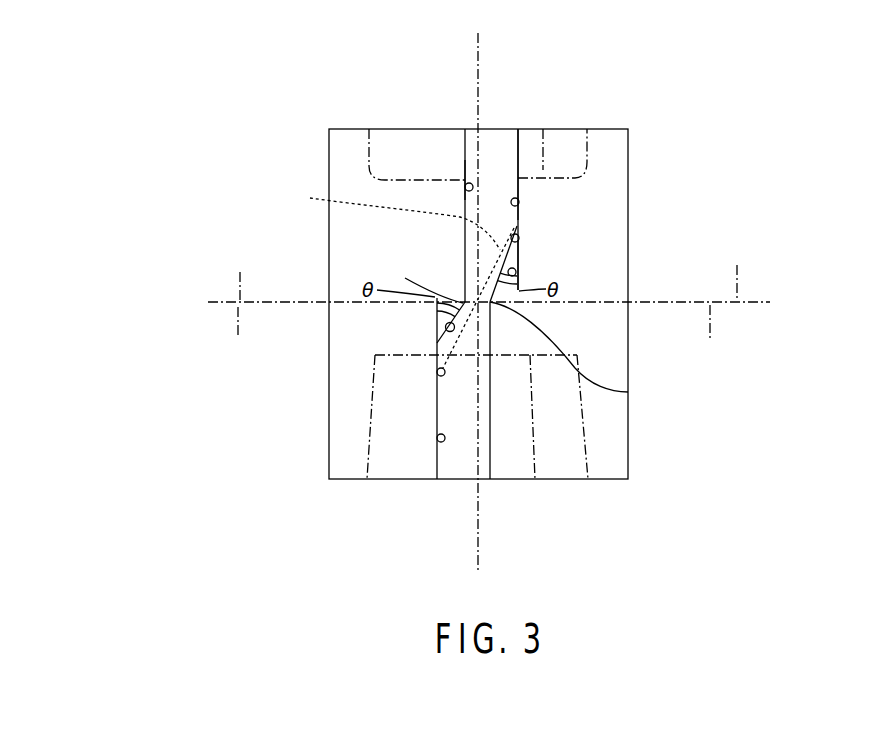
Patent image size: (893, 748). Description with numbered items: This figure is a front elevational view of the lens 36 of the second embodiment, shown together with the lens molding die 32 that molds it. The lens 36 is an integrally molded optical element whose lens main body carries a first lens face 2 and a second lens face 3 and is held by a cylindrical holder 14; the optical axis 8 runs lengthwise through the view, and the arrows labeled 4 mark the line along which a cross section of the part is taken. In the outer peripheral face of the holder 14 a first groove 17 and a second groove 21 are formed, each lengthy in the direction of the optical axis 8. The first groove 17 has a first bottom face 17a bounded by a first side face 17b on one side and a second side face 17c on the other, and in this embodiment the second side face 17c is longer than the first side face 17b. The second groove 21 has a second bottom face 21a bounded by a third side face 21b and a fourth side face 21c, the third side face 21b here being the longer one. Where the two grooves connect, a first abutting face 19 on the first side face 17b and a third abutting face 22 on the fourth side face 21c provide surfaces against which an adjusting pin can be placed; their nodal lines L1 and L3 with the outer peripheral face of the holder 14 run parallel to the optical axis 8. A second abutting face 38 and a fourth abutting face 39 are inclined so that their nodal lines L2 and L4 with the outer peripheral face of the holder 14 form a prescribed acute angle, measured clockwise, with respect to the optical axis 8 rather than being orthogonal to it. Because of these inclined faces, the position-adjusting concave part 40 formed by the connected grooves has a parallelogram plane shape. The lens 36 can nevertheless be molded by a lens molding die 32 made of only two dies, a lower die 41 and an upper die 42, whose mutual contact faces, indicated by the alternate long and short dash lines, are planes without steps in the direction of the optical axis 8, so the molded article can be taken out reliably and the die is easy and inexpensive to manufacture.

The lens 36 is at (312, 126).
The first groove 17 is at (485, 140).
The first bottom face 17a is at (510, 142).
The first side face 17b is at (520, 197).
The second side face 17c is at (465, 182).
The holder 14 is at (398, 128).
The optical axis 8 is at (476, 116).
The first lens face 2 is at (543, 127).
The section line 4 is at (477, 47).
The position-adjusting concave part 40 is at (393, 278).
The nodal line L4 is at (405, 278).
The nodal line L1 is at (519, 251).
The nodal line L2 is at (628, 392).
The nodal line L3 is at (437, 359).
The upper die 42 is at (485, 273).
The lens molding die 32 is at (215, 262).
The lower die 41 is at (472, 334).
The fourth abutting face 39 is at (437, 322).
The second abutting face 38 is at (518, 268).
The first abutting face 19 is at (520, 233).
The third abutting face 22 is at (437, 379).
The second groove 21 is at (457, 462).
The second bottom face 21a is at (445, 465).
The third side face 21b is at (490, 461).
The fourth side face 21c is at (437, 430).
The second lens face 3 is at (533, 480).